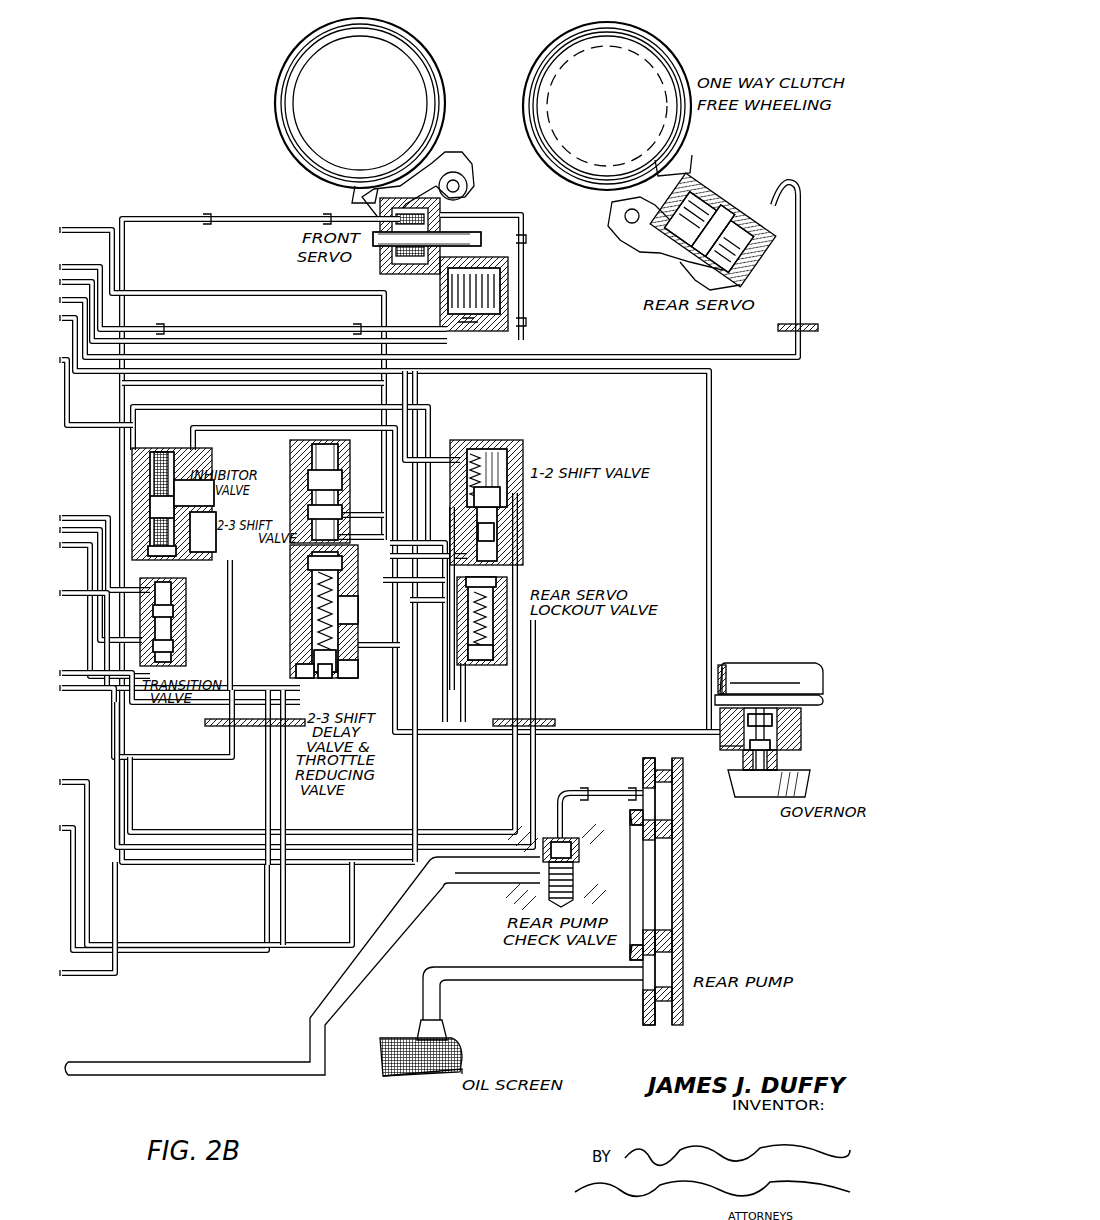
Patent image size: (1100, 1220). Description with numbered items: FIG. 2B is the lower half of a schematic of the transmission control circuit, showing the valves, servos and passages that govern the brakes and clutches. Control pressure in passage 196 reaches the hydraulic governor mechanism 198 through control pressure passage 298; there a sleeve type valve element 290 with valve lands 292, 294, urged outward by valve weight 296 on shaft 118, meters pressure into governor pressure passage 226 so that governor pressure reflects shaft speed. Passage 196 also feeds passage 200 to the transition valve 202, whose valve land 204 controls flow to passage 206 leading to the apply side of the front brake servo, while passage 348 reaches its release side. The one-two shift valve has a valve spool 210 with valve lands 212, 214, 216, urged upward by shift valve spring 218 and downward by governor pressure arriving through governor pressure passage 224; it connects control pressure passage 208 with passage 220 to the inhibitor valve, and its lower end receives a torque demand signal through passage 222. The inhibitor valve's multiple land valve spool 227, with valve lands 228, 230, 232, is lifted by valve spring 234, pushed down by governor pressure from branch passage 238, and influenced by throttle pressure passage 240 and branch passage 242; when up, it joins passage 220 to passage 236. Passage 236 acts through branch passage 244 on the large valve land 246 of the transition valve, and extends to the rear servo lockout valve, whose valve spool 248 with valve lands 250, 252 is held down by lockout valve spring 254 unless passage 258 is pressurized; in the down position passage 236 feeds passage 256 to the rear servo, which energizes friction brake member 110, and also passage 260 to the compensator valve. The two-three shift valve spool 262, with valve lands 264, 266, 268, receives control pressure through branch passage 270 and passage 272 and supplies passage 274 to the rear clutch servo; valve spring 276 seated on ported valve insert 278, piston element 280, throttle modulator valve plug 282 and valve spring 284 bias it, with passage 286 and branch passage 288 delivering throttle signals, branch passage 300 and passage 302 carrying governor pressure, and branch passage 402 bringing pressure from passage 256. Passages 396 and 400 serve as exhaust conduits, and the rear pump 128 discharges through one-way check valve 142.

The friction brake member 110 is at (684, 58).
The passage 348 is at (523, 256).
The passage 206 is at (126, 256).
The passage 256 is at (754, 362).
The passage 196 is at (590, 375).
The control pressure passage 298 is at (705, 658).
The passage 274 is at (418, 438).
The governor pressure passage 226 is at (208, 422).
The passage 220 is at (293, 414).
The governor pressure passage 224 is at (468, 440).
The passage 200 is at (84, 514).
The valve land 232 is at (126, 514).
The branch passage 244 is at (208, 663).
The valve land 246 is at (152, 652).
The passage 272 is at (197, 762).
The passage 400 is at (200, 834).
The passage 396 is at (423, 832).
The passage 302 is at (268, 881).
The passage 258 is at (447, 716).
The shift valve spool 262 is at (337, 514).
The valve land 266 is at (346, 537).
The branch passage 300 is at (405, 546).
The passage 208 is at (452, 560).
The branch passage 402 is at (393, 589).
The passage 222 is at (545, 540).
The branch passage 288 is at (356, 630).
The passage 260 is at (538, 771).
The passage 286 is at (412, 756).
The rear pump 128 is at (691, 944).
The one-way check valve 142 is at (580, 876).
The shaft 118 is at (810, 672).
The valve land 292 is at (775, 716).
The valve land 294 is at (776, 730).
The hydraulic governor mechanism 198 is at (780, 752).
The sleeve type valve element 290 is at (745, 750).
The valve weight 296 is at (732, 794).
The branch passage 238 is at (180, 438).
The valve land 228 is at (140, 452).
The valve land 230 is at (140, 488).
The multiple land valve spool 227 is at (174, 501).
The valve spring 234 is at (155, 554).
The branch passage 242 is at (215, 526).
The passage 236 is at (231, 560).
The valve land 204 is at (180, 569).
The transition valve 202 is at (158, 618).
The valve land 264 is at (310, 460).
The branch passage 270 is at (312, 571).
The valve land 268 is at (314, 589).
The piston element 280 is at (312, 602).
The throttle pressure passage 240 is at (312, 615).
The valve spring 276 is at (358, 600).
The ported valve insert 278 is at (305, 670).
The throttle modulator valve plug 282 is at (334, 670).
The valve spring 284 is at (368, 666).
The shift valve spring 218 is at (522, 489).
The valve land 216 is at (470, 460).
The valve land 212 is at (470, 486).
The valve spool 210 is at (500, 503).
The valve land 214 is at (498, 529).
The valve land 250 is at (500, 580).
The lockout valve spring 254 is at (500, 578).
The valve spool 248 is at (500, 630).
The valve land 252 is at (500, 652).